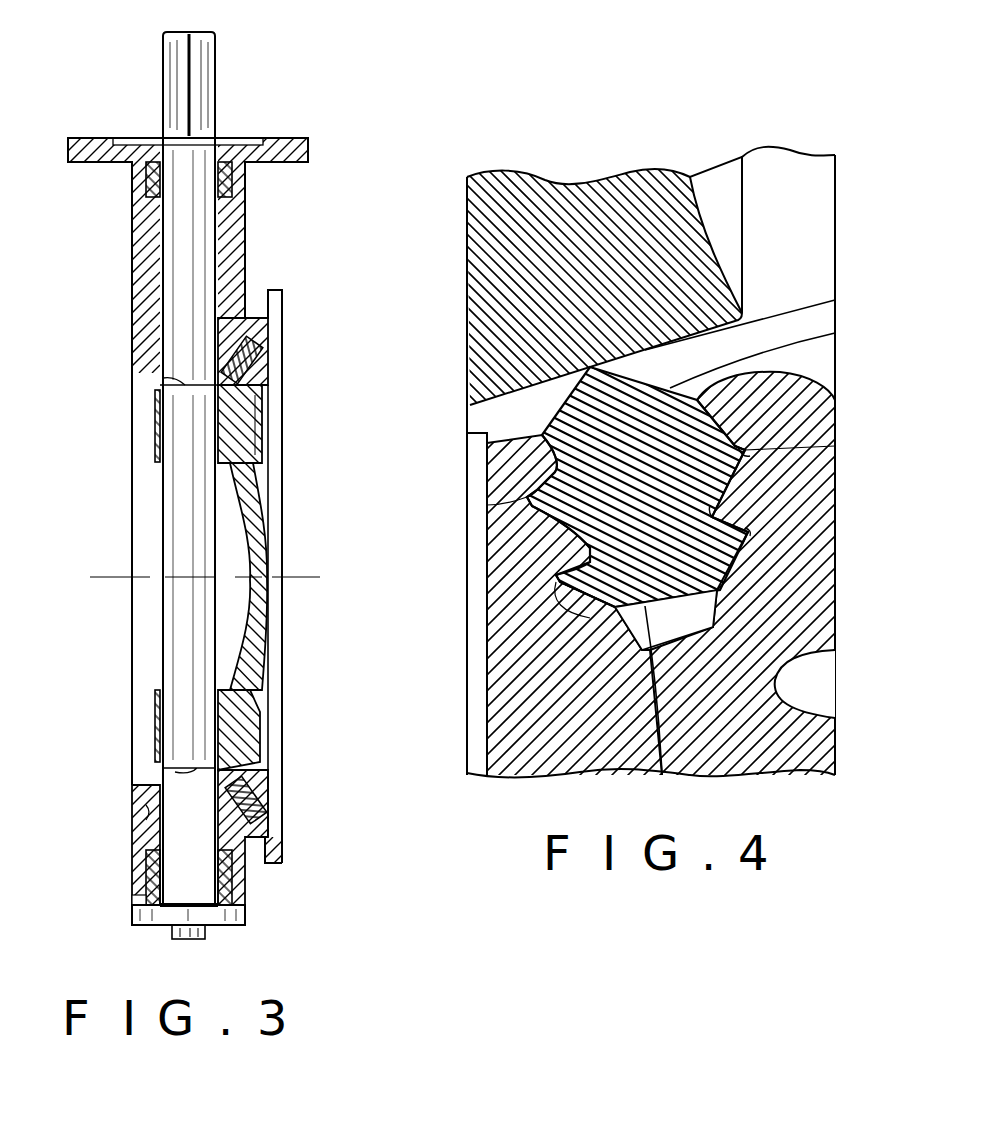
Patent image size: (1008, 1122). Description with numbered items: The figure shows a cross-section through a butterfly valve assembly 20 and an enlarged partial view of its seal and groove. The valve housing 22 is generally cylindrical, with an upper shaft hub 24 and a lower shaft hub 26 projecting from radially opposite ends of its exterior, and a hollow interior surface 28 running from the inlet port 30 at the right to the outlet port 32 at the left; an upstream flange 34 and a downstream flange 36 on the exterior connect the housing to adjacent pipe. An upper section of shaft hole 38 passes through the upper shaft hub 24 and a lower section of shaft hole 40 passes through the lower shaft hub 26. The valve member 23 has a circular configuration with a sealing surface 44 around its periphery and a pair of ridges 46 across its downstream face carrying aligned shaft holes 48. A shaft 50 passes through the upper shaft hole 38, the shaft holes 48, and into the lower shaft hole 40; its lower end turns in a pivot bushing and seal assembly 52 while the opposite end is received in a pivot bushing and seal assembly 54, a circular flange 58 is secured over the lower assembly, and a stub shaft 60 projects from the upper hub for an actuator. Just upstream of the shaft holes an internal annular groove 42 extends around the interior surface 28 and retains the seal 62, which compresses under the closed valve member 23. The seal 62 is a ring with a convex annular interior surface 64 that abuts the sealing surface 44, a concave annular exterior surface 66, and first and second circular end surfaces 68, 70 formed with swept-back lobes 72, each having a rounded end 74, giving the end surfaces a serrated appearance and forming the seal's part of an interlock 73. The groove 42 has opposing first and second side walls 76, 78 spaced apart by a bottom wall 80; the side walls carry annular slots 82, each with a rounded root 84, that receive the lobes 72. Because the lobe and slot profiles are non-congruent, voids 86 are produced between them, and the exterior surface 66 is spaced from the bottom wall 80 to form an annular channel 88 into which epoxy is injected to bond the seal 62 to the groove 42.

In FIG. 3, the valve assembly 20 is at (300, 95).
In FIG. 3, the valve housing 22 is at (132, 800).
In FIG. 4, the valve housing 22 is at (835, 210).
In FIG. 3, the valve member 23 is at (252, 714).
In FIG. 4, the valve member 23 is at (693, 200).
In FIG. 3, the upper shaft hub 24 is at (132, 230).
In FIG. 3, the lower shaft hub 26 is at (242, 898).
In FIG. 3, the hollow interior surface 28 is at (160, 380).
In FIG. 3, the inlet port 30 is at (282, 553).
In FIG. 4, the inlet port 30 is at (835, 235).
In FIG. 3, the outlet port 32 is at (132, 568).
In FIG. 3, the upstream flange 34 is at (283, 863).
In FIG. 3, the downstream flange 36 is at (148, 817).
In FIG. 3, the upper section of shaft hole 38 is at (215, 222).
In FIG. 3, the lower section of shaft hole 40 is at (178, 834).
In FIG. 3, the internal annular groove 42 is at (287, 803).
In FIG. 4, the internal annular groove 42 is at (742, 621).
In FIG. 3, the sealing surface 44 is at (268, 378).
In FIG. 4, the sealing surface 44 is at (745, 330).
In FIG. 3, the ridges 46 is at (155, 432).
In FIG. 3, the shaft holes 48 is at (175, 378).
In FIG. 3, the shaft 50 is at (173, 520).
In FIG. 3, the pivot bushing and seal assembly 52 is at (147, 890).
In FIG. 3, the pivot bushing and seal assembly 54 is at (140, 173).
In FIG. 3, the circular flange 58 is at (218, 913).
In FIG. 3, the stub shaft 60 is at (215, 70).
In FIG. 3, the seal 62 is at (276, 786).
In FIG. 4, the seal 62 is at (755, 581).
In FIG. 4, the annular interior surface 64 is at (700, 365).
In FIG. 4, the annular exterior surface 66 is at (660, 777).
In FIG. 4, the first circular end surface 68 is at (530, 500).
In FIG. 4, the second circular end surface 70 is at (745, 449).
In FIG. 4, the lobes 72 is at (755, 529).
In FIG. 4, the interlock 73 is at (725, 507).
In FIG. 4, the rounded end 74 is at (750, 540).
In FIG. 4, the first side wall 76 is at (570, 615).
In FIG. 4, the second side wall 78 is at (748, 459).
In FIG. 4, the bottom wall 80 is at (792, 704).
In FIG. 4, the annular slots 82 is at (528, 506).
In FIG. 4, the rounded root 84 is at (556, 573).
In FIG. 4, the voids 86 is at (787, 396).
In FIG. 4, the annular channel 88 is at (695, 620).